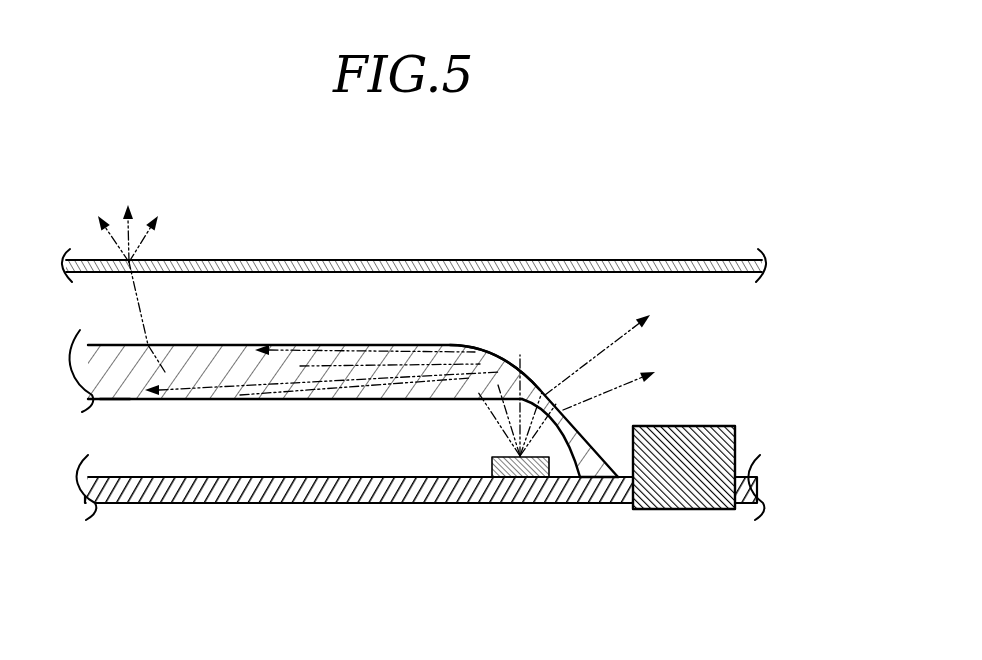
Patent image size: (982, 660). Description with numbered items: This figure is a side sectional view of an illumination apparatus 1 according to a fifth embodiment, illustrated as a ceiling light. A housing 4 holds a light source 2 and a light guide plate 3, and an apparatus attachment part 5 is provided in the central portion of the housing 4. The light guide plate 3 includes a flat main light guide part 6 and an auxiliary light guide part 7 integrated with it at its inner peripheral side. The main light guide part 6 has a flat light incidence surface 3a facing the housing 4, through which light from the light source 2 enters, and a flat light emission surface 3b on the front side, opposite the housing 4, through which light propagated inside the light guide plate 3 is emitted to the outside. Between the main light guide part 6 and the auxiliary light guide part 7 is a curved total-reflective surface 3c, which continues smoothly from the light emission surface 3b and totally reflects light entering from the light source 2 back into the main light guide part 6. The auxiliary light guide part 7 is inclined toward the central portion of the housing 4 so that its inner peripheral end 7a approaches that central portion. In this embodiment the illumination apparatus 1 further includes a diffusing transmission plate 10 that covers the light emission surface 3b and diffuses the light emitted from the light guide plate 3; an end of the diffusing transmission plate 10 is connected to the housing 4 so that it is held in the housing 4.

The illumination apparatus 1 is at (733, 184).
The diffusing transmission plate 10 is at (424, 265).
The light guide plate 3 is at (361, 433).
The light incidence surface 3a is at (448, 400).
The light emission surface 3b is at (297, 345).
The total-reflective surface 3c is at (478, 352).
The main light guide part 6 is at (117, 370).
The auxiliary light guide part 7 is at (559, 478).
The inner peripheral end 7a is at (597, 470).
The housing 4 is at (325, 504).
The light source 2 is at (512, 503).
The apparatus attachment part 5 is at (675, 490).